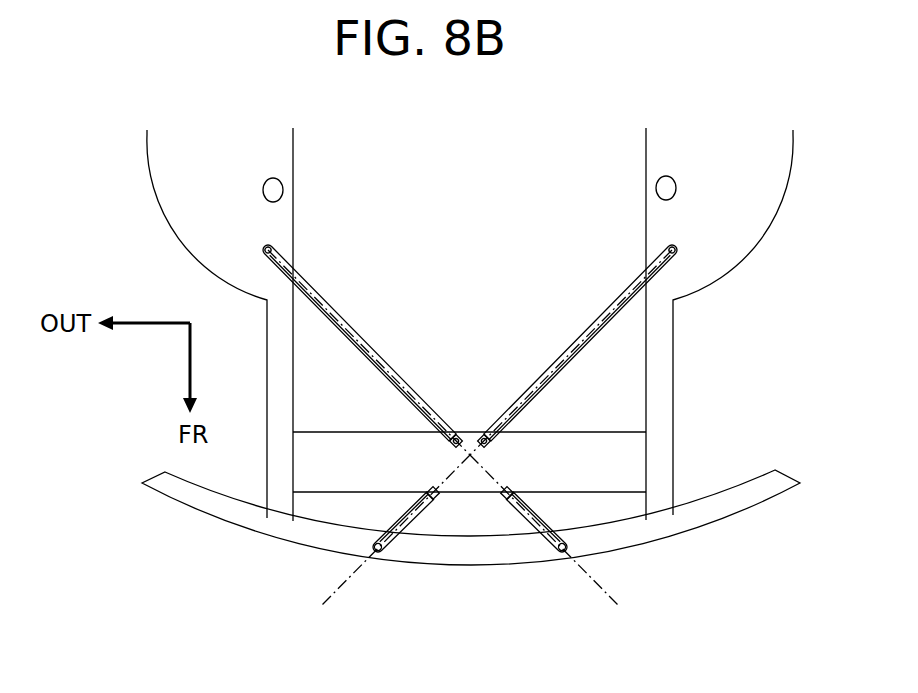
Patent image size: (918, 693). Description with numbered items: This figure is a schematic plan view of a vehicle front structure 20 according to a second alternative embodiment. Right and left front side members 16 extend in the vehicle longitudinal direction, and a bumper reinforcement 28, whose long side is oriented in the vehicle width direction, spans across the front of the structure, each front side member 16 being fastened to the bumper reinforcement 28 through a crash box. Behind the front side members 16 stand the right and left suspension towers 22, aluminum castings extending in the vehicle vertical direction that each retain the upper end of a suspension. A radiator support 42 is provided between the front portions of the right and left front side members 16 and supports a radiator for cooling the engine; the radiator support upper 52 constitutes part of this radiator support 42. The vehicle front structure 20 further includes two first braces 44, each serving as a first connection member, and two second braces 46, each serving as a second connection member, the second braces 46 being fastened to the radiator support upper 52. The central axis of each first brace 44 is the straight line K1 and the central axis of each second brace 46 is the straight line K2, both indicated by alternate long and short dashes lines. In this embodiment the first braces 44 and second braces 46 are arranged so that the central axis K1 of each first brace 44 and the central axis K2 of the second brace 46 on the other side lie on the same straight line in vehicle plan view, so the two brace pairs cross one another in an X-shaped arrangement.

The front side member 16 is at (282, 373).
The vehicle front structure 20 is at (472, 410).
The suspension tower 22 is at (282, 146).
The bumper reinforcement 28 is at (737, 505).
The radiator support 42 is at (592, 432).
The first brace 44 is at (397, 518).
The second brace 46 is at (343, 315).
The radiator support upper 52 is at (352, 445).
The central axis of first brace K1 is at (420, 523).
The central axis of second brace K2 is at (383, 355).